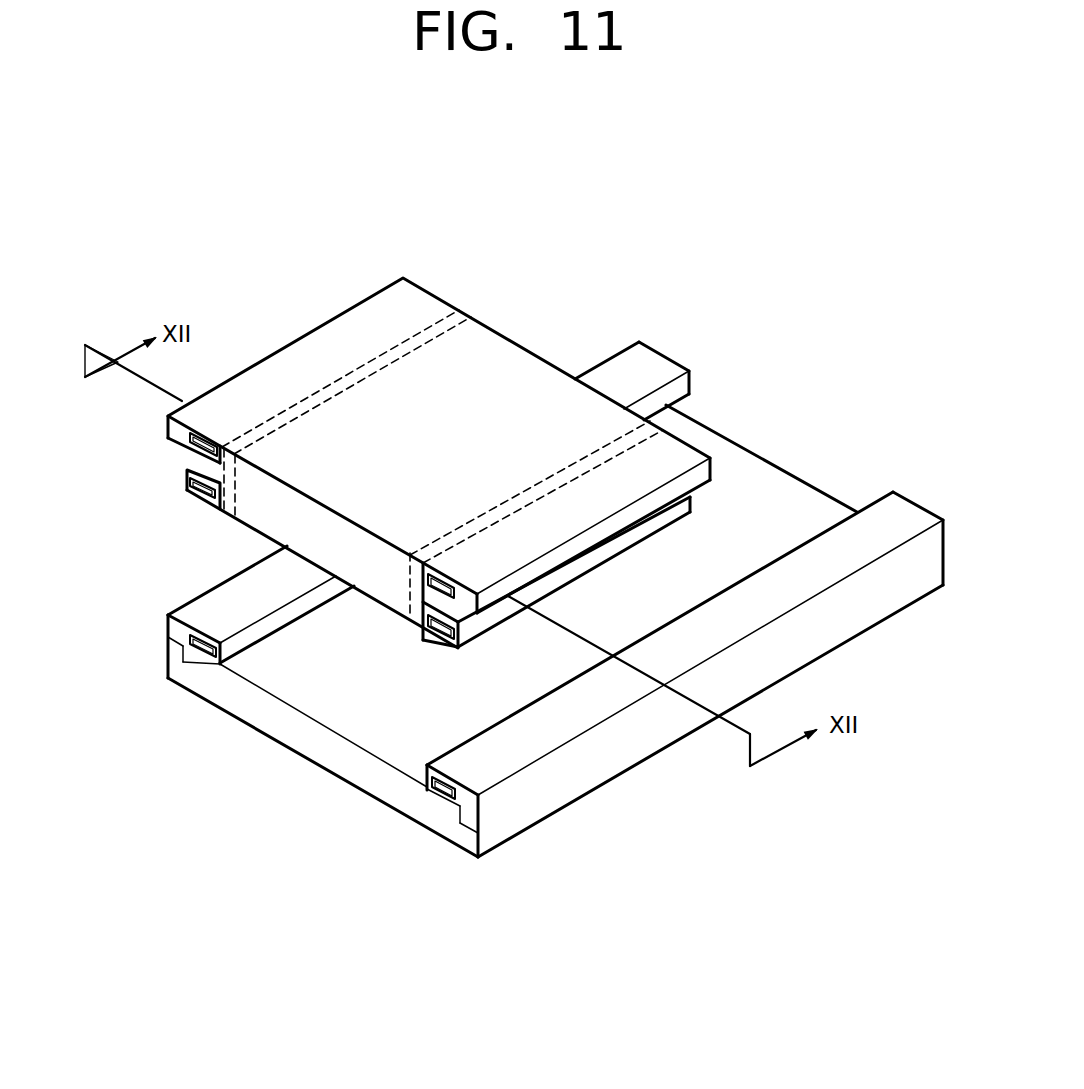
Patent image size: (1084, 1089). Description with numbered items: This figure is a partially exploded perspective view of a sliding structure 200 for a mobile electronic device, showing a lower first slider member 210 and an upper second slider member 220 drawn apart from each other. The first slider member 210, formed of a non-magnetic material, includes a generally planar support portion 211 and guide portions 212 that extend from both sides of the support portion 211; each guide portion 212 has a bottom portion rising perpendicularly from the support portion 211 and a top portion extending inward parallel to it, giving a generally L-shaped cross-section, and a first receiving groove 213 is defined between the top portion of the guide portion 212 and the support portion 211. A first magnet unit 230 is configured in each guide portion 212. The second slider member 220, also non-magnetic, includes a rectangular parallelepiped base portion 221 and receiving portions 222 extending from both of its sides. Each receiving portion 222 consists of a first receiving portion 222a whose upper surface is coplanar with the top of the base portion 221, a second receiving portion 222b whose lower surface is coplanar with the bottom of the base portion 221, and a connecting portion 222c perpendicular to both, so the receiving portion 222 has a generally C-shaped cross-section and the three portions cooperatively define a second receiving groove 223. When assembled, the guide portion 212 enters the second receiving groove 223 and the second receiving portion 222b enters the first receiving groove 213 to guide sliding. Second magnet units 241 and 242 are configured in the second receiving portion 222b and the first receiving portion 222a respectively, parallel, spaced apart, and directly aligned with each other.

The sliding structure 200 is at (721, 193).
The first slider member 210 is at (260, 745).
The support portion 211 is at (305, 745).
The guide portion 212 is at (178, 658).
The first receiving groove 213 is at (204, 662).
The second slider member 220 is at (569, 348).
The base portion 221 is at (497, 352).
The receiving portion 222 is at (364, 333).
The first receiving portion 222a is at (181, 432).
The second receiving portion 222b is at (188, 479).
The connecting portion 222c is at (232, 505).
The second receiving groove 223 is at (210, 466).
The first magnet unit 230 is at (195, 640).
The second magnet unit 241 is at (207, 490).
The second magnet unit 242 is at (205, 445).